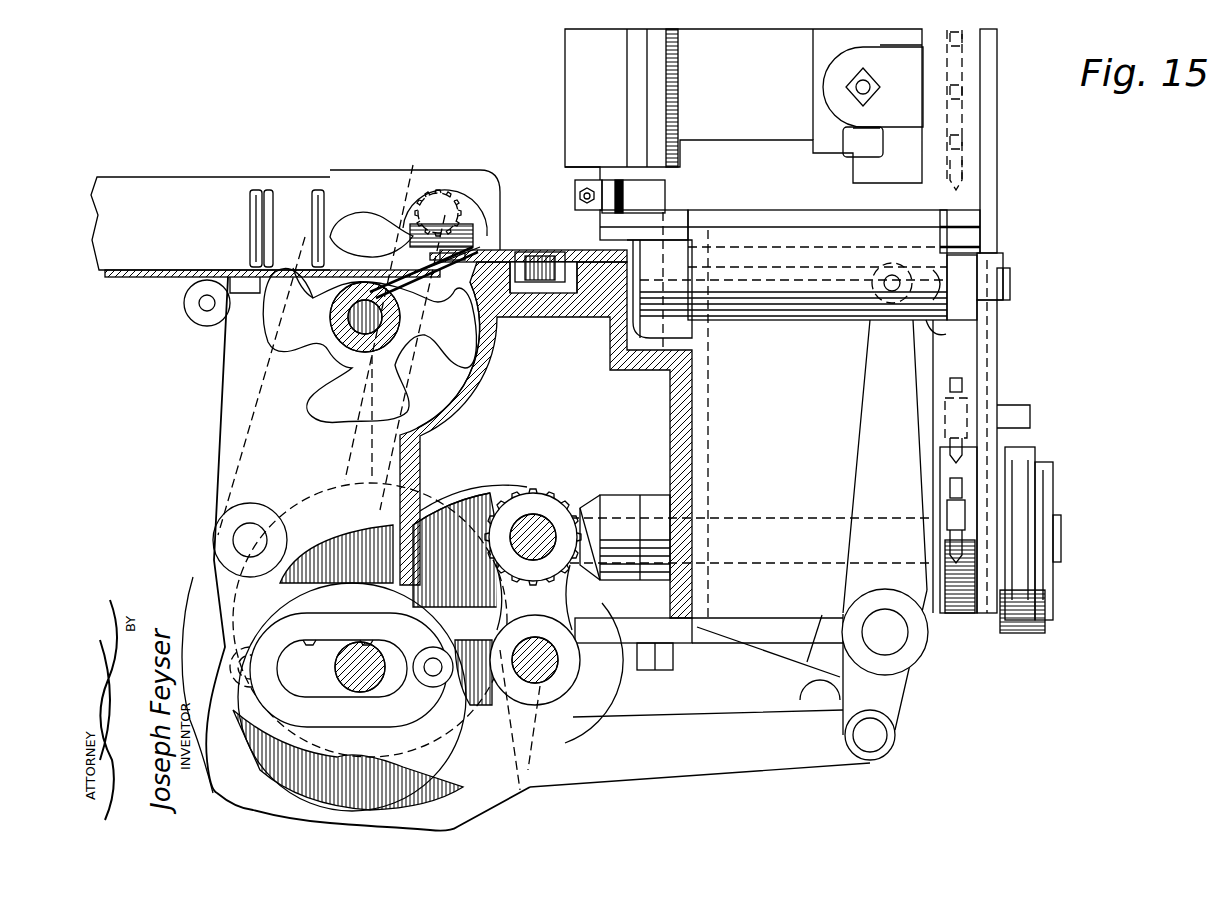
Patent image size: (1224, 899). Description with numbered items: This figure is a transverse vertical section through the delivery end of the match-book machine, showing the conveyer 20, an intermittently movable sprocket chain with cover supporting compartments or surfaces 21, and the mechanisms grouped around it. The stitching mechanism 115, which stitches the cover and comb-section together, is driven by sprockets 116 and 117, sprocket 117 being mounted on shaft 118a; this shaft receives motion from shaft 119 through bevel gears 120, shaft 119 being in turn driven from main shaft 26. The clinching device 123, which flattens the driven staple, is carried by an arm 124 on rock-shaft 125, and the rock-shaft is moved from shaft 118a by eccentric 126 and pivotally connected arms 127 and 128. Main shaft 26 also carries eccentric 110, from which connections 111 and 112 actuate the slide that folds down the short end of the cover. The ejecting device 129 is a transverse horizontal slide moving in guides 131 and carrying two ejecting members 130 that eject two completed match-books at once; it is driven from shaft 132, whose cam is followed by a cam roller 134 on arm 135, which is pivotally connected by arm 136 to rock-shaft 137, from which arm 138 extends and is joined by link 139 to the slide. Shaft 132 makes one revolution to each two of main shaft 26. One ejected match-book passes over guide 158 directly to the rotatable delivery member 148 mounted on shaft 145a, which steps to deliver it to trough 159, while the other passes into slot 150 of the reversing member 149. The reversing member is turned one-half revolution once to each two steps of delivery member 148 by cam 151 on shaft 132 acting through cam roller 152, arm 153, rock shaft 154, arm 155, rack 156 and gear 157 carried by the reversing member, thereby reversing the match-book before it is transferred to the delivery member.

The trough 159 is at (197, 187).
The rack 156 is at (255, 540).
The slot 150 is at (362, 448).
The gear 157 is at (447, 195).
The reversing member 149 is at (456, 200).
The guide 158 is at (487, 215).
The clinching device 123 is at (578, 208).
The blank or cover supporting compartments or surfaces 21 is at (550, 236).
The stitching mechanism 115 is at (587, 126).
The sprocket 116 is at (960, 160).
The ejecting device 129 is at (680, 213).
The guides 131 is at (738, 217).
The rock-shaft 125 is at (1010, 285).
The conveyer 20 is at (543, 267).
The ejecting members 130 is at (587, 273).
The arm 124 is at (655, 325).
The link 139 is at (934, 330).
The arm 128 is at (990, 355).
The delivery member 148 is at (371, 348).
The shaft 145a is at (340, 322).
The arm 155 is at (243, 426).
The arm 138 is at (870, 406).
The shaft 118a is at (1093, 518).
The sprocket 117 is at (963, 490).
The arm 127 is at (1023, 470).
The eccentric 126 is at (1040, 497).
The rock shaft 154 is at (243, 538).
The arm 153 is at (265, 600).
The cam roller 152 is at (238, 650).
The shaft 132 is at (335, 667).
The cam 151 is at (420, 503).
The shaft 119 is at (527, 517).
The bevel gears 120 is at (580, 493).
The connection 112 is at (820, 628).
The connection 111 is at (768, 663).
The rock-shaft 137 is at (893, 637).
The arm 136 is at (897, 711).
The eccentric 110 is at (612, 692).
The arm 135 is at (700, 748).
The cam roller 134 is at (433, 687).
The main shaft 26 is at (547, 677).